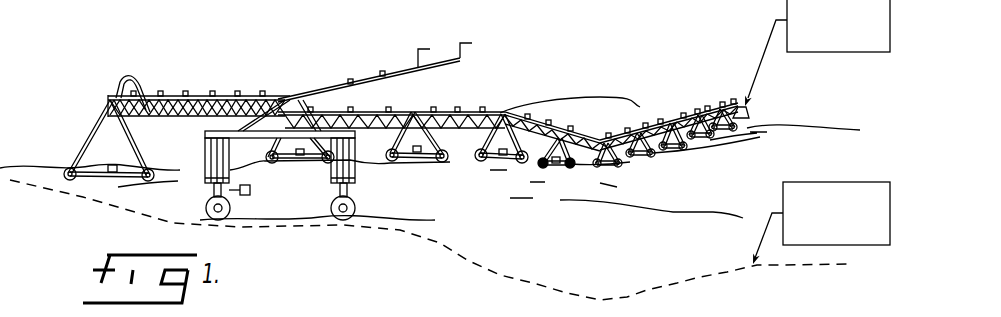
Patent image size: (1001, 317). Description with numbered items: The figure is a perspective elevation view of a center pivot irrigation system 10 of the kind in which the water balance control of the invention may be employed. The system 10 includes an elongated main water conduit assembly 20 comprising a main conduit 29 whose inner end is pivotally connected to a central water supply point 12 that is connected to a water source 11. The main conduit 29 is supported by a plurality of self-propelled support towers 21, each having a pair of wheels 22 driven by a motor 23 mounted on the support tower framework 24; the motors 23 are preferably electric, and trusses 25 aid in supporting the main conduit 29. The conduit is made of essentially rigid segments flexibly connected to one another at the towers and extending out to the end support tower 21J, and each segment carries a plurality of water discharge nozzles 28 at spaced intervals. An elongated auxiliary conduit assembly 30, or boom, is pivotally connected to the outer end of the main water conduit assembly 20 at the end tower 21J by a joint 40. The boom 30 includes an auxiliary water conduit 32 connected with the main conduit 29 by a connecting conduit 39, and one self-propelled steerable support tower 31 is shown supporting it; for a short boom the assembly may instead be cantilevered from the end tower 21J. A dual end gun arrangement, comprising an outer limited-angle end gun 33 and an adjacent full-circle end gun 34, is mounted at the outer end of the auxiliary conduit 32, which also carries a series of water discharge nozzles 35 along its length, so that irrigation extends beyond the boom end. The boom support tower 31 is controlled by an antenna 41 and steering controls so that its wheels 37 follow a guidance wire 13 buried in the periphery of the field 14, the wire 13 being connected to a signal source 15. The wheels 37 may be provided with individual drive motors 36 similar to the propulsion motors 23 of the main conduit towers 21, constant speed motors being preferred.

The center pivot irrigation system 10 is at (456, 140).
The water source 11 is at (828, 53).
The central water supply point 12 is at (743, 100).
The guidance wire 13 is at (538, 274).
The field 14 is at (677, 245).
The signal source 15 is at (846, 160).
The main water conduit assembly 20 is at (687, 104).
The self-propelled support towers 21 is at (524, 135).
The end support tower 21J is at (88, 138).
The wheels 22 is at (393, 161).
The motor 23 is at (109, 175).
The support tower framework 24 is at (398, 145).
The trusses 25 is at (332, 112).
The water discharge nozzles 28 is at (395, 106).
The main conduit 29 is at (465, 113).
The auxiliary conduit assembly 30 is at (234, 79).
The steerable support tower 31 is at (205, 137).
The auxiliary water conduit 32 is at (297, 92).
The limited-angle end gun 33 is at (470, 40).
The full-circle end gun 34 is at (419, 49).
The water discharge nozzles 35 is at (214, 93).
The drive motors 36 is at (218, 212).
The wheels 37 is at (209, 204).
The connecting conduit 39 is at (126, 75).
The joint 40 is at (111, 98).
The antenna 41 is at (250, 191).